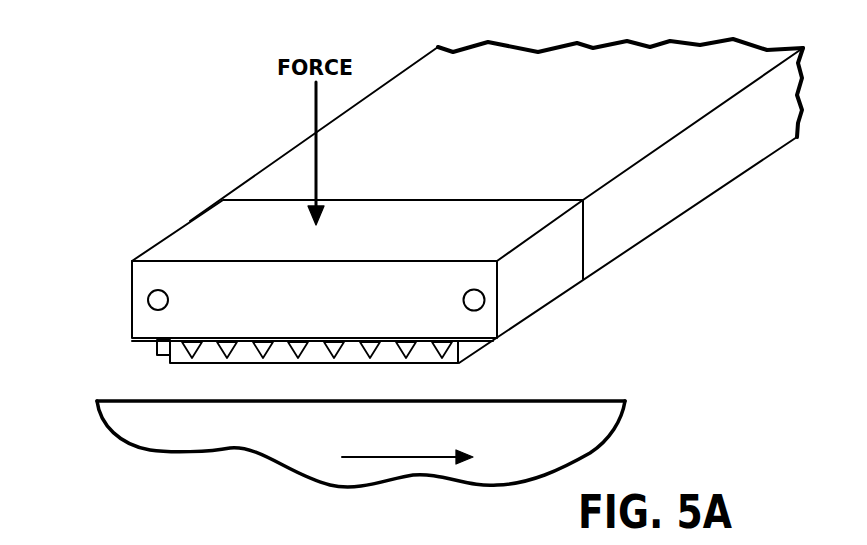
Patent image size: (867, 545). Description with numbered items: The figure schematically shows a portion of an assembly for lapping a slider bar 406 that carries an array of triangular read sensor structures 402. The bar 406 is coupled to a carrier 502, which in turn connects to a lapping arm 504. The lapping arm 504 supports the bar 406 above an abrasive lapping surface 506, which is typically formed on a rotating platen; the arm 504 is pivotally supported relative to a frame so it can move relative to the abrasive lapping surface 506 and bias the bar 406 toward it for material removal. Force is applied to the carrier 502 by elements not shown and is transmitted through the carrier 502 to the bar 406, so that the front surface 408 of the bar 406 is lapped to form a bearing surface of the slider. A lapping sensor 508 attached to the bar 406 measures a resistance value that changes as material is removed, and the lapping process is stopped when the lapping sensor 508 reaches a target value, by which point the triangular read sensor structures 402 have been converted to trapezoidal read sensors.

The triangular read sensor structures 402 is at (263, 358).
The slider bar 406 is at (470, 354).
The front surface 408 is at (313, 374).
The carrier 502 is at (463, 233).
The lapping arm 504 is at (546, 133).
The abrasive lapping surface 506 is at (563, 401).
The lapping sensor 508 is at (157, 351).